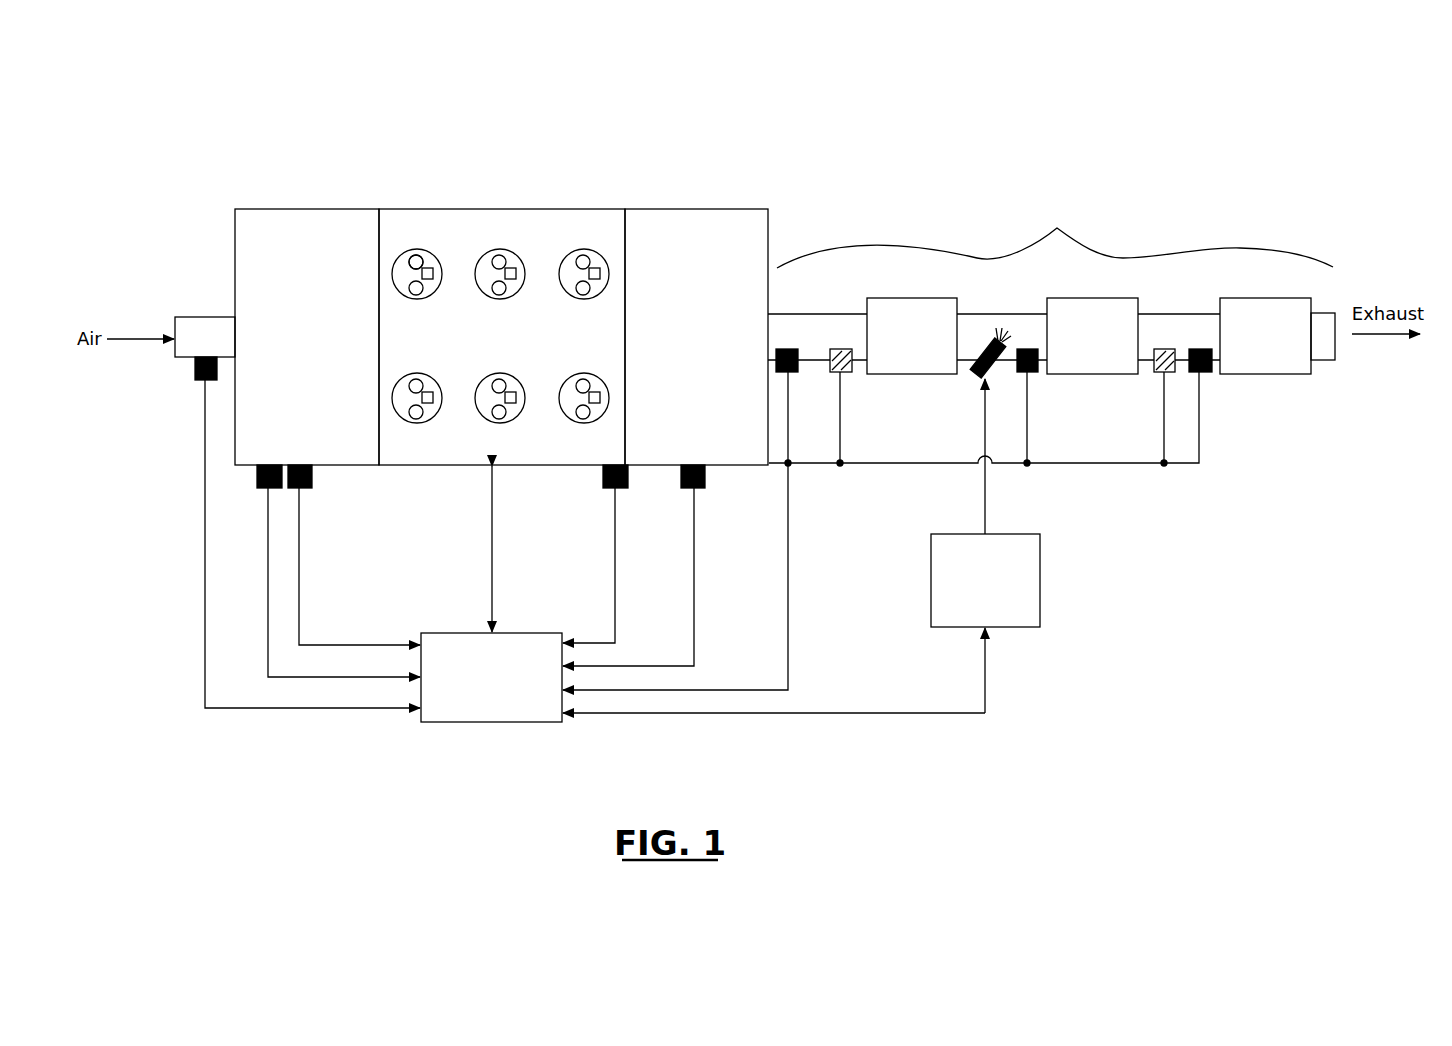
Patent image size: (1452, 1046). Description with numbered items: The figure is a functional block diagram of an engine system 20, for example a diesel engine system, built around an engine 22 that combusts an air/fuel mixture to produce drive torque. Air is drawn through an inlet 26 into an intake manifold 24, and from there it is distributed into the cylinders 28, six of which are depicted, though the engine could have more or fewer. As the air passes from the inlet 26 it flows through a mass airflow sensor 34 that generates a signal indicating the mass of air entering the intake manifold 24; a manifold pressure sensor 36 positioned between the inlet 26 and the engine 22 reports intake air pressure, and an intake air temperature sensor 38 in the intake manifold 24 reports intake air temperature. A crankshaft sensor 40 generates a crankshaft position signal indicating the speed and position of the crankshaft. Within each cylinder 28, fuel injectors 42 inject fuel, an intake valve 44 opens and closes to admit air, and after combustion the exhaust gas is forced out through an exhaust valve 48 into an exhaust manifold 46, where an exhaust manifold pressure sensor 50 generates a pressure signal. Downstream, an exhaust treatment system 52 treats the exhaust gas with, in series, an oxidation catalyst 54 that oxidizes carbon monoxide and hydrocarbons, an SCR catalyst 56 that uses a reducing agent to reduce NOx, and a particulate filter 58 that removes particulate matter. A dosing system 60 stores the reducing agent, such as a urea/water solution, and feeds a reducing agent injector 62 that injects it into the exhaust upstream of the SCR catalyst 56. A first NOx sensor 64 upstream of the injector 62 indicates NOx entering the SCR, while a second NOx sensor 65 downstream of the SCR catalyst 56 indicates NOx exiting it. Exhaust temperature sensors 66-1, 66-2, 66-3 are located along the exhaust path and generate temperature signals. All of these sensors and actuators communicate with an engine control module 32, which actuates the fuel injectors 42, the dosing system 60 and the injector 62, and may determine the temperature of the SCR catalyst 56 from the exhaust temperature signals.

The engine system 20 is at (270, 124).
The engine 22 is at (508, 209).
The intake manifold 24 is at (235, 232).
The inlet 26 is at (205, 317).
The cylinders 28 is at (512, 389).
The engine control module 32 is at (492, 723).
The mass airflow sensor 34 is at (195, 369).
The manifold pressure sensor 36 is at (257, 478).
The intake air temperature sensor 38 is at (312, 478).
The crankshaft sensor 40 is at (604, 478).
The fuel injectors 42 is at (511, 266).
The intake valve 44 is at (418, 419).
The exhaust manifold 46 is at (770, 231).
The exhaust valve 48 is at (418, 256).
The exhaust manifold pressure sensor 50 is at (705, 478).
The exhaust treatment system 52 is at (1063, 221).
The oxidation catalyst 54 is at (912, 298).
The SCR catalyst 56 is at (1092, 298).
The particulate filter 58 is at (1265, 298).
The dosing system 60 is at (1040, 578).
The reducing agent injector 62 is at (997, 372).
The first NOx sensor 64 is at (855, 372).
The second NOx sensor 65 is at (1154, 372).
The exhaust temperature sensor 66-1 is at (799, 372).
The exhaust temperature sensor 66-2 is at (1030, 372).
The exhaust temperature sensor 66-3 is at (1208, 372).